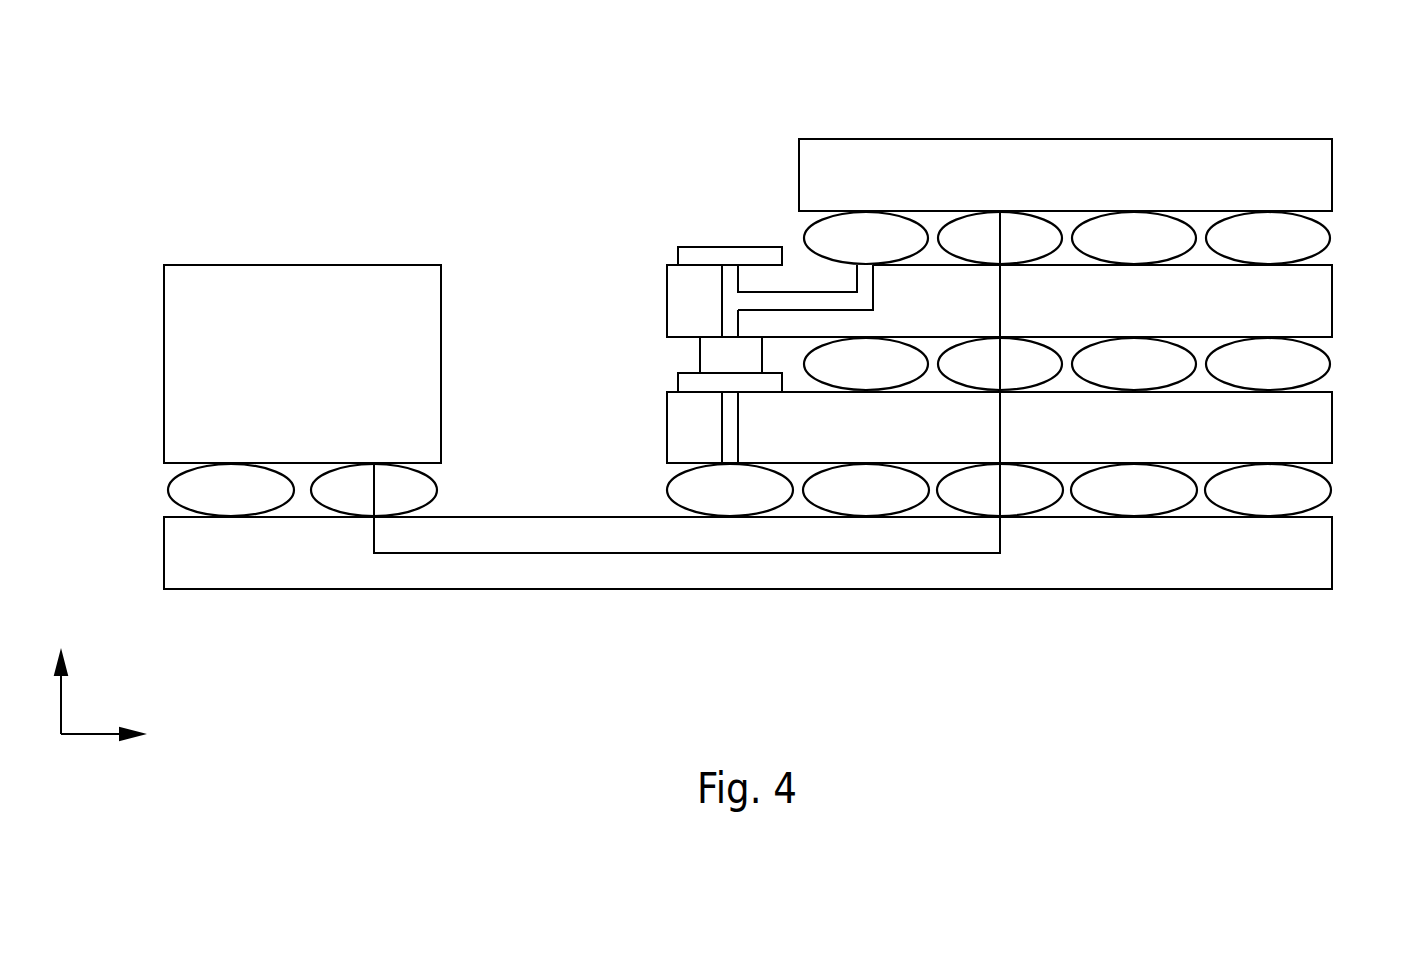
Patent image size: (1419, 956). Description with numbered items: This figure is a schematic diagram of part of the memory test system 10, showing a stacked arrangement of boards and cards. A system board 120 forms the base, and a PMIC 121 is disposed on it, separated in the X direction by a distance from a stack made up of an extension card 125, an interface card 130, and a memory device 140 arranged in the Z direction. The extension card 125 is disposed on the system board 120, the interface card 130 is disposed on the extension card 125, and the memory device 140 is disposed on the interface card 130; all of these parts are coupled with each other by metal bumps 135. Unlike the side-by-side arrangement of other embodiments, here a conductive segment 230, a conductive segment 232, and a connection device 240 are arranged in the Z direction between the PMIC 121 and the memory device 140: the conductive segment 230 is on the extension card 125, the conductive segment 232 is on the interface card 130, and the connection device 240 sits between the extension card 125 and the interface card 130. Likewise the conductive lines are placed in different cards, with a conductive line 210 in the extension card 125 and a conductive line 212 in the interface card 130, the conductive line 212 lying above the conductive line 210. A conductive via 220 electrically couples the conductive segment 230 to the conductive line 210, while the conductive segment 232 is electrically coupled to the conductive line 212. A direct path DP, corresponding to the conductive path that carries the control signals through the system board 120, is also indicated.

The memory test system 10 is at (153, 83).
The system board 120 is at (1327, 553).
The PMIC 121 is at (324, 381).
The extension card 125 is at (1327, 430).
The interface card 130 is at (1327, 303).
The bumps 135 is at (1330, 230).
The memory device 140 is at (1327, 183).
The conductive line 210 is at (722, 437).
The conductive line 212 is at (767, 290).
The conductive via 220 is at (720, 278).
The conductive segment 230 is at (678, 383).
The conductive segment 232 is at (722, 253).
The connection device 240 is at (698, 350).
The direct path DP is at (1000, 528).